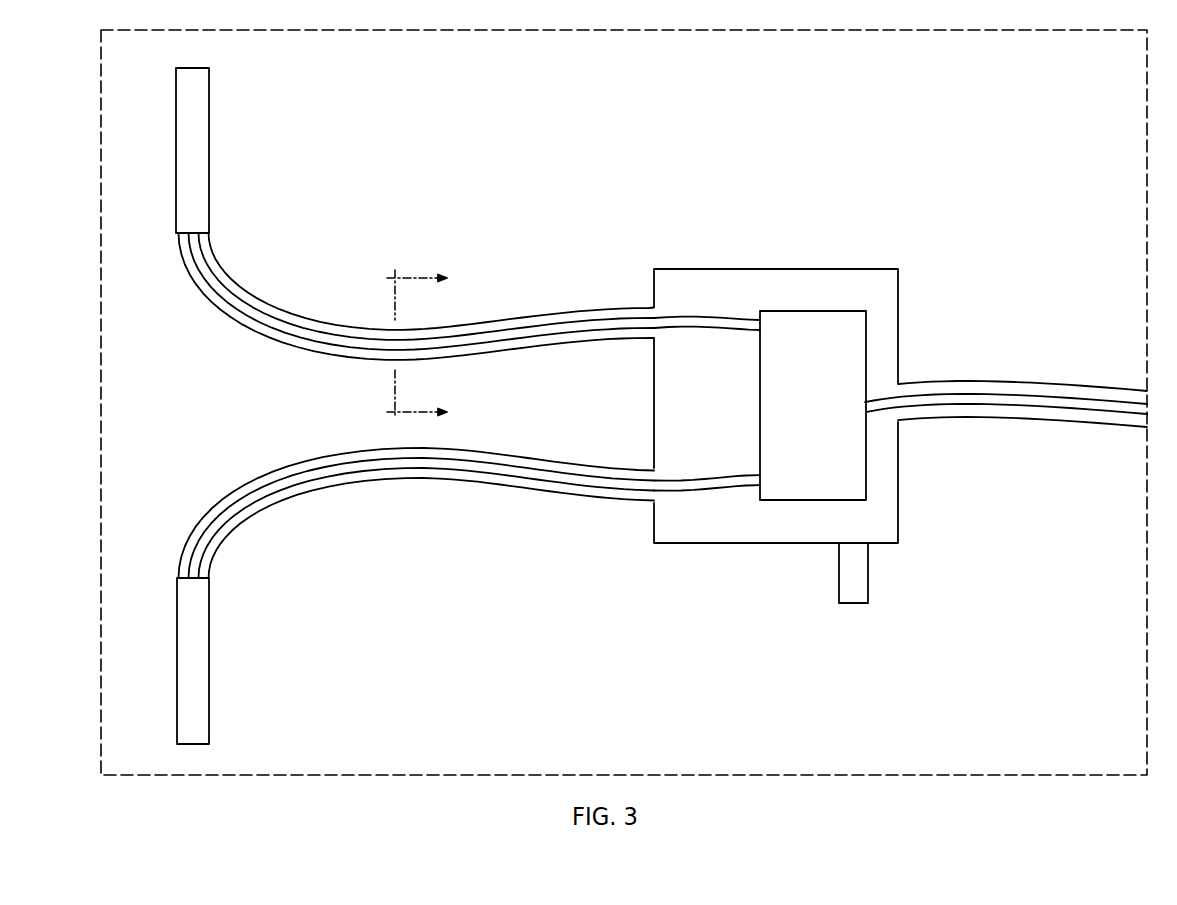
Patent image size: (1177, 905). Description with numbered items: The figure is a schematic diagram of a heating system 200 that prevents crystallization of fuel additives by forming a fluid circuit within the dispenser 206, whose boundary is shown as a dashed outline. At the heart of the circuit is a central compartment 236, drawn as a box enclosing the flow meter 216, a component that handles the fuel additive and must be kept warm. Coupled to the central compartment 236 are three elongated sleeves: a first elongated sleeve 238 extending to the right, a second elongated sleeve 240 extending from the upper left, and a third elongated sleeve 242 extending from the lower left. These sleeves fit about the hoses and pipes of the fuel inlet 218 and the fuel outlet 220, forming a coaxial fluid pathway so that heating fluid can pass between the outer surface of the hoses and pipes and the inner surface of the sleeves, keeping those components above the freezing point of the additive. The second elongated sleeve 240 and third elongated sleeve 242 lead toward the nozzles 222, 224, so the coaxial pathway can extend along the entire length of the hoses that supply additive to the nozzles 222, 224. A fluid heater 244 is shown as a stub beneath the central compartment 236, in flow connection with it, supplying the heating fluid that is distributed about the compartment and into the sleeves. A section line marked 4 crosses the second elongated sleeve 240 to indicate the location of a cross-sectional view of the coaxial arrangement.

The heating system 200 is at (978, 150).
The dispenser 206 is at (1117, 756).
The flow meter 216 is at (826, 454).
The fuel inlet 218 is at (867, 411).
The fuel outlet 220 is at (712, 327).
The nozzle 222 is at (242, 165).
The nozzle 224 is at (245, 683).
The central compartment 236 is at (870, 269).
The first elongated sleeve 238 is at (1013, 383).
The second elongated sleeve 240 is at (567, 313).
The third elongated sleeve 242 is at (545, 492).
The fluid heater 244 is at (868, 585).
The section line 4- 4 is at (424, 345).